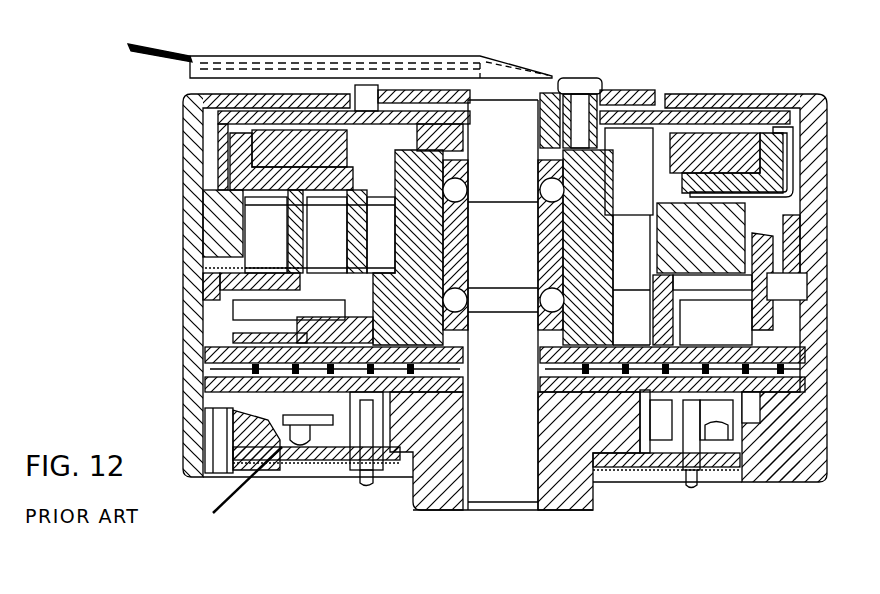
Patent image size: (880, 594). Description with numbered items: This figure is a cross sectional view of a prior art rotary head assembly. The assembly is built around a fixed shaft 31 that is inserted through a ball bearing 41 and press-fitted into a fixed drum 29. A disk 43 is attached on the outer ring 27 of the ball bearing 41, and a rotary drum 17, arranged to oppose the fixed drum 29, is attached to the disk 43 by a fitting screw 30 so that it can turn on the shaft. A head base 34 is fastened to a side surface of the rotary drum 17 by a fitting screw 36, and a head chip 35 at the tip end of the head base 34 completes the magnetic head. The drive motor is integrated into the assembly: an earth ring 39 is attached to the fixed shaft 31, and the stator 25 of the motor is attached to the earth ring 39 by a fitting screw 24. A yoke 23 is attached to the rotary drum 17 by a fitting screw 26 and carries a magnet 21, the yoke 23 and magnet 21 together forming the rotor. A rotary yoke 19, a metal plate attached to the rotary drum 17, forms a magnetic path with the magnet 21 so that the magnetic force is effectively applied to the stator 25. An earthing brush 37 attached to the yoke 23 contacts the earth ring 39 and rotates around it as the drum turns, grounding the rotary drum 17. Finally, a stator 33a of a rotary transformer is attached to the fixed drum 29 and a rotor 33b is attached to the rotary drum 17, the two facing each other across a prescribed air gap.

The rotary drum 17 is at (815, 168).
The rotary yoke 19 is at (750, 110).
The magnet 21 is at (748, 143).
The yoke 23 is at (780, 150).
The fitting screw 24 is at (573, 105).
The stator 25 is at (683, 120).
The fitting screw 26 is at (320, 136).
The outer ring 27 is at (582, 297).
The fixed drum 29 is at (802, 430).
The fitting screw 30 is at (630, 187).
The fixed shaft 31 is at (487, 477).
The stator of rotary transformer 33a is at (213, 380).
The rotor of rotary transformer 33b is at (210, 353).
The head base 34 is at (232, 278).
The head chip 35 is at (202, 272).
The fitting screw 36 is at (317, 223).
The earthing brush 37 is at (365, 210).
The earth ring 39 is at (418, 128).
The ball bearing 41 is at (553, 330).
The disk 43 is at (767, 305).